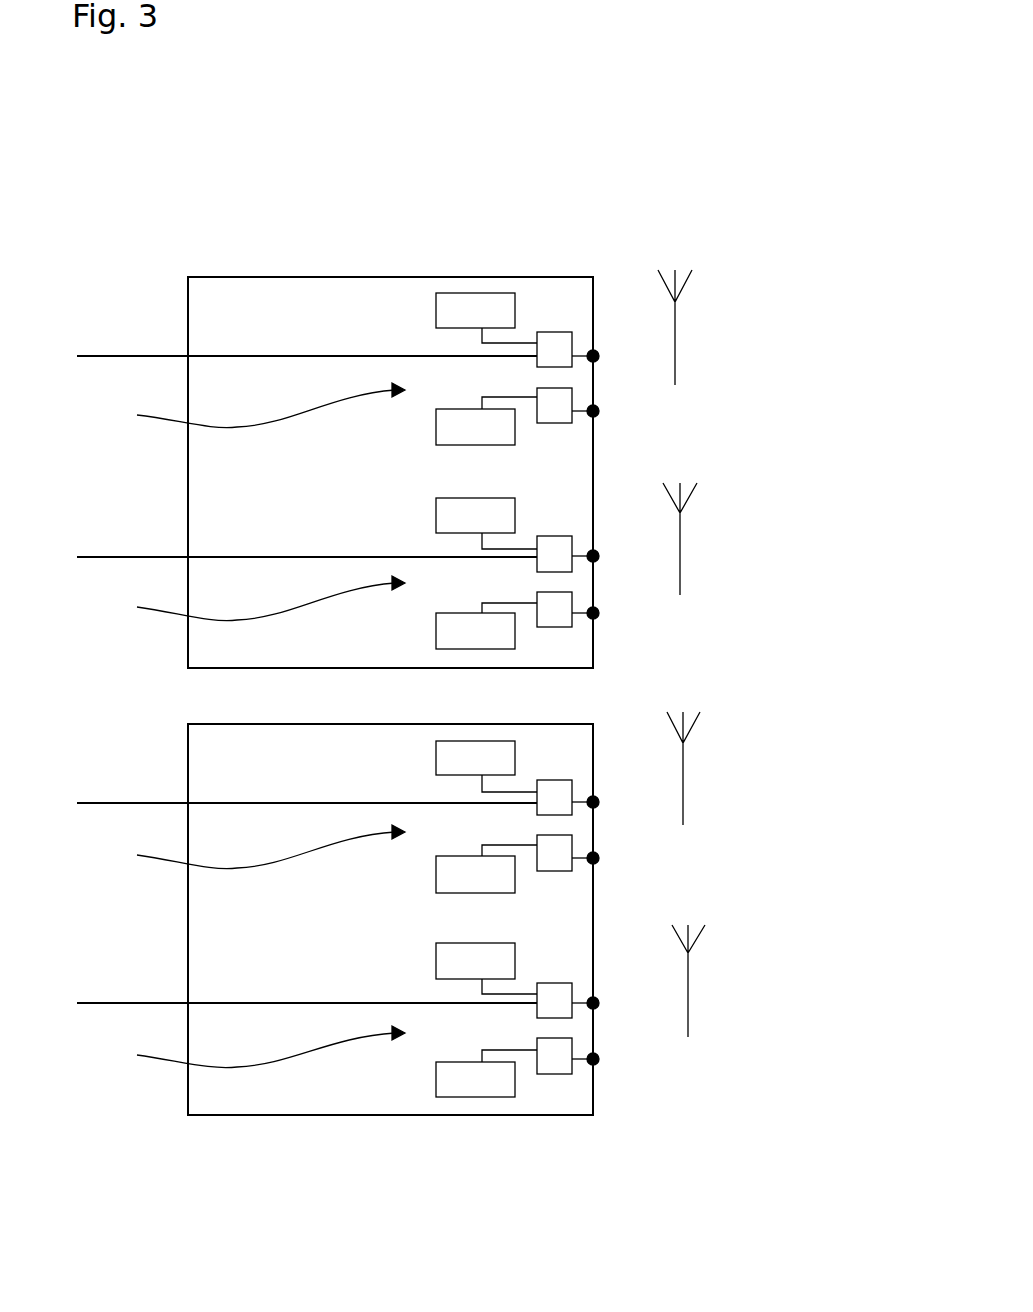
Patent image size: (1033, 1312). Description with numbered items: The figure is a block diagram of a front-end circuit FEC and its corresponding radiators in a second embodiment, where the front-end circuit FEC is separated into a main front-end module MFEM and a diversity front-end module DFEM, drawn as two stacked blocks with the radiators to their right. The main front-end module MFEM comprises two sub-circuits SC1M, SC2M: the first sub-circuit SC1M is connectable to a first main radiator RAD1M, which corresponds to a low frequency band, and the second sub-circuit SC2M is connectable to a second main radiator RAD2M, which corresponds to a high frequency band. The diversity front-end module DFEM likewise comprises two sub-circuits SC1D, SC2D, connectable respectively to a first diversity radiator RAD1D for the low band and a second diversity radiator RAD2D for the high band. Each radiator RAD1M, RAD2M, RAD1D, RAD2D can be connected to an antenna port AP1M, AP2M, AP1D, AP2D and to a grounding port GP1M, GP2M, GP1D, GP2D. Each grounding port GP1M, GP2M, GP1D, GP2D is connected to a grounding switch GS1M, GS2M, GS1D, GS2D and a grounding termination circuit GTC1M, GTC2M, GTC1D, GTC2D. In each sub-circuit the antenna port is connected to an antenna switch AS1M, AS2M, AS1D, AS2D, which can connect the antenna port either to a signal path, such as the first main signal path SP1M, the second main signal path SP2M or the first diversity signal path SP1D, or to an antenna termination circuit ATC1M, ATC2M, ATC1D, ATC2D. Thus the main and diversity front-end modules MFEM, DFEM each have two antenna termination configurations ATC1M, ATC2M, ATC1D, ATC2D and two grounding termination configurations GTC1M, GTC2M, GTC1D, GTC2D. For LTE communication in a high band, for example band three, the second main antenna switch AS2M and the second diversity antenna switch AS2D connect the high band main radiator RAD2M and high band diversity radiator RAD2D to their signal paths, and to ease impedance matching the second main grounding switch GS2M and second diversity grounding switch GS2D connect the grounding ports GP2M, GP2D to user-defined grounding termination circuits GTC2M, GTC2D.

The front-end circuit FEC is at (208, 242).
The main front-end module MFEM is at (192, 305).
The diversity front-end module DFEM is at (208, 722).
The first main signal path SP1M is at (348, 355).
The second main signal path SP2M is at (213, 555).
The first diversity signal path SP1D is at (213, 803).
The first main sub-circuit SC1M is at (220, 408).
The second main sub-circuit SC2M is at (220, 600).
The first diversity sub-circuit SC1D is at (220, 849).
The second diversity sub-circuit SC2D is at (220, 1049).
The first main antenna termination circuit ATC1M is at (483, 312).
The second main antenna termination circuit ATC2M is at (457, 515).
The first diversity antenna termination circuit ATC1D is at (457, 762).
The second diversity antenna termination circuit ATC2D is at (457, 965).
The first main antenna switch AS1M is at (556, 345).
The second main antenna switch AS2M is at (553, 553).
The first diversity antenna switch AS1D is at (553, 800).
The second diversity antenna switch AS2D is at (552, 1000).
The first main antenna port AP1M is at (593, 356).
The second main antenna port AP2M is at (593, 556).
The first diversity antenna port AP1D is at (593, 802).
The second diversity antenna port AP2D is at (593, 1003).
The first main radiator RAD1M is at (675, 350).
The second main radiator RAD2M is at (680, 552).
The first diversity radiator RAD1D is at (683, 800).
The second diversity radiator RAD2D is at (688, 1003).
The first main grounding port GP1M is at (593, 411).
The second main grounding port GP2M is at (593, 613).
The first diversity grounding port GP1D is at (593, 858).
The second diversity grounding port GP2D is at (593, 1059).
The first main grounding switch GS1M is at (557, 415).
The second main grounding switch GS2M is at (557, 615).
The first diversity grounding switch GS1D is at (557, 860).
The second diversity grounding switch GS2D is at (557, 1065).
The first main grounding termination circuit GTC1M is at (477, 433).
The second main grounding termination circuit GTC2M is at (477, 633).
The first diversity grounding termination circuit GTC1D is at (477, 880).
The second diversity grounding termination circuit GTC2D is at (463, 1082).